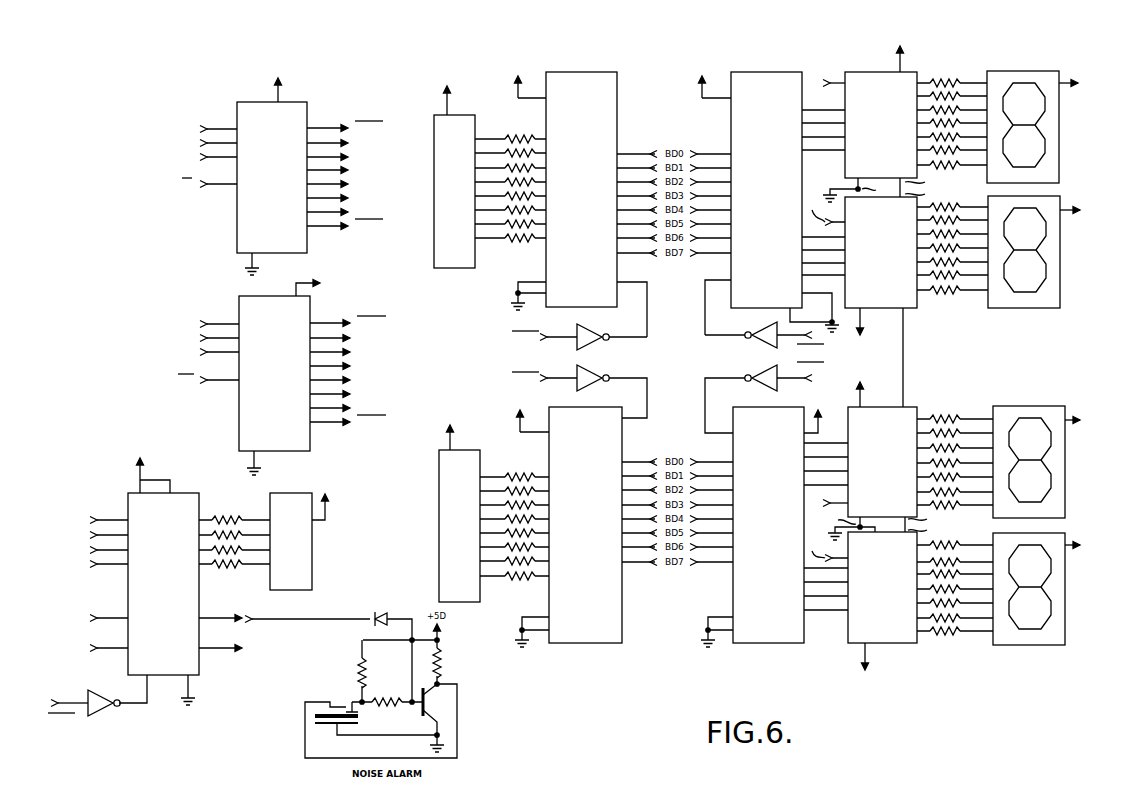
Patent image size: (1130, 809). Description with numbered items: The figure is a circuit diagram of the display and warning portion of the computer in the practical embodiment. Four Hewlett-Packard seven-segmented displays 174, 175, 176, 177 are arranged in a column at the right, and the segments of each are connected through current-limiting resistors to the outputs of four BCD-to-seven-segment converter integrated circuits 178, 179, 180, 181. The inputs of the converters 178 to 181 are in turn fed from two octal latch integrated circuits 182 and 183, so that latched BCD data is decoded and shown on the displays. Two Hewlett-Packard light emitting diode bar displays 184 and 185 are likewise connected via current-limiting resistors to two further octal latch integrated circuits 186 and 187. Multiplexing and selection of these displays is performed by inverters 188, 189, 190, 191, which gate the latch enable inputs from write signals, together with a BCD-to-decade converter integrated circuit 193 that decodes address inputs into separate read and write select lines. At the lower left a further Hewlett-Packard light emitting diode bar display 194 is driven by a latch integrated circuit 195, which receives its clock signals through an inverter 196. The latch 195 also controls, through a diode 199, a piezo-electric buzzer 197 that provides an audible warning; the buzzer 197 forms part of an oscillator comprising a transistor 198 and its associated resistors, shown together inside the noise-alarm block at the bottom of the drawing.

The seven-segmented display 174 is at (1059, 140).
The seven-segmented display 175 is at (1062, 250).
The seven-segmented display 176 is at (1065, 455).
The seven-segmented display 177 is at (1065, 580).
The BCD-to-7-segment converter integrated circuit 178 is at (878, 72).
The BCD-to-7-segment converter integrated circuit 179 is at (915, 306).
The BCD-to-7-segment converter integrated circuit 180 is at (917, 407).
The BCD-to-7-segment converter integrated circuit 181 is at (905, 643).
The octal latch integrated circuit 182 is at (755, 72).
The octal latch integrated circuit 183 is at (775, 643).
The light emitting diode bar display 184 is at (455, 268).
The light emitting diode bar display 185 is at (439, 465).
The octal latch integrated circuit 186 is at (604, 72).
The octal latch integrated circuit 187 is at (595, 643).
The inverter 188 is at (592, 350).
The inverter 189 is at (588, 365).
The inverter 190 is at (755, 350).
The inverter 191 is at (755, 366).
The BCD-to-decade converter integrated circuit 193 is at (307, 110).
The light emitting diode bar display 194 is at (310, 312).
The latch integrated circuit 195 is at (185, 493).
The inverter 196 is at (100, 714).
The piezo-electric buzzer 197 is at (340, 703).
The transistor 198 is at (433, 700).
The diode 199 is at (376, 612).